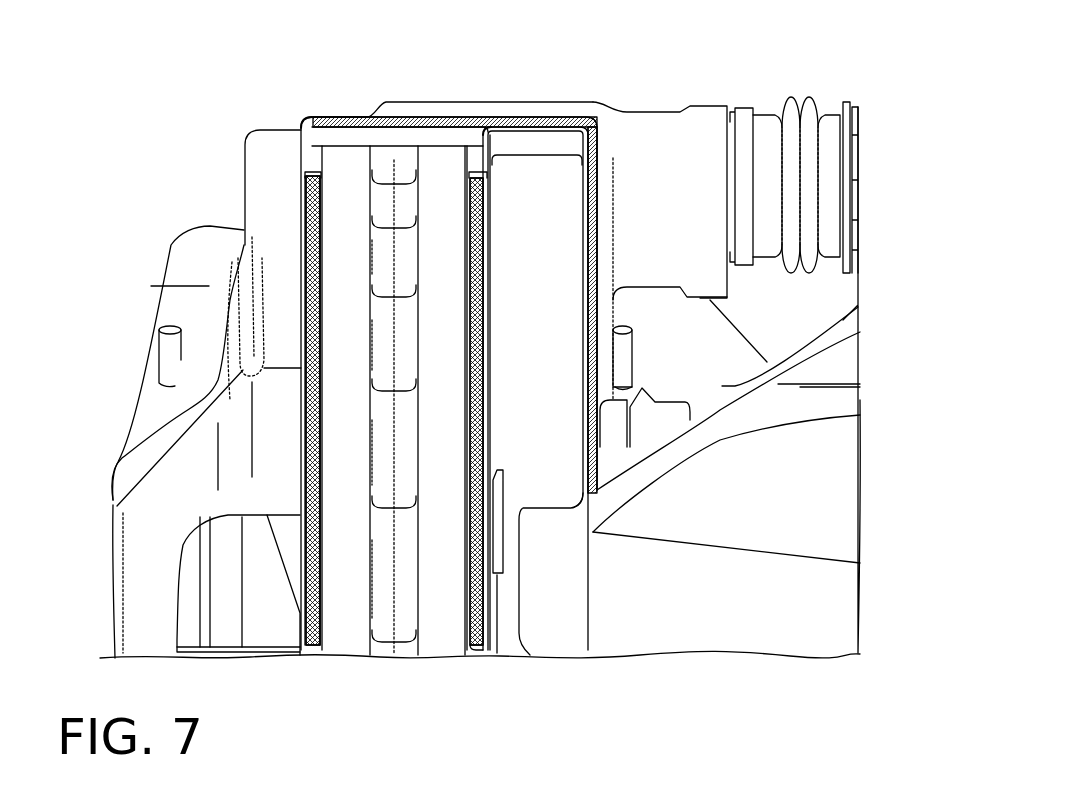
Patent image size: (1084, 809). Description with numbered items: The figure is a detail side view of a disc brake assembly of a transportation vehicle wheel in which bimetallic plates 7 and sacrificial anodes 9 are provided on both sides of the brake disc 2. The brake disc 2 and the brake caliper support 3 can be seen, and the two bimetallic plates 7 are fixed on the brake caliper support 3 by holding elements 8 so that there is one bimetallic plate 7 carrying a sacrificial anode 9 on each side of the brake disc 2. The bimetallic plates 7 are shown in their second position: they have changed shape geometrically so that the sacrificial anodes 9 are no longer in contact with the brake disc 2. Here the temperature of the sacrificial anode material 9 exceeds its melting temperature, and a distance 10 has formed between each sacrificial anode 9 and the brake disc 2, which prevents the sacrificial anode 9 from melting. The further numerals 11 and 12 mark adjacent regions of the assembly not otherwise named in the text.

The brake disc 2 is at (340, 160).
The brake caliper support 3 is at (683, 165).
The bimetallic plate 7 is at (308, 193).
The holding element 8 is at (527, 140).
The sacrificial anode 9 is at (315, 234).
The distance 10 is at (317, 267).
The corner region 11 is at (302, 160).
The outer housing wall 12 is at (302, 294).